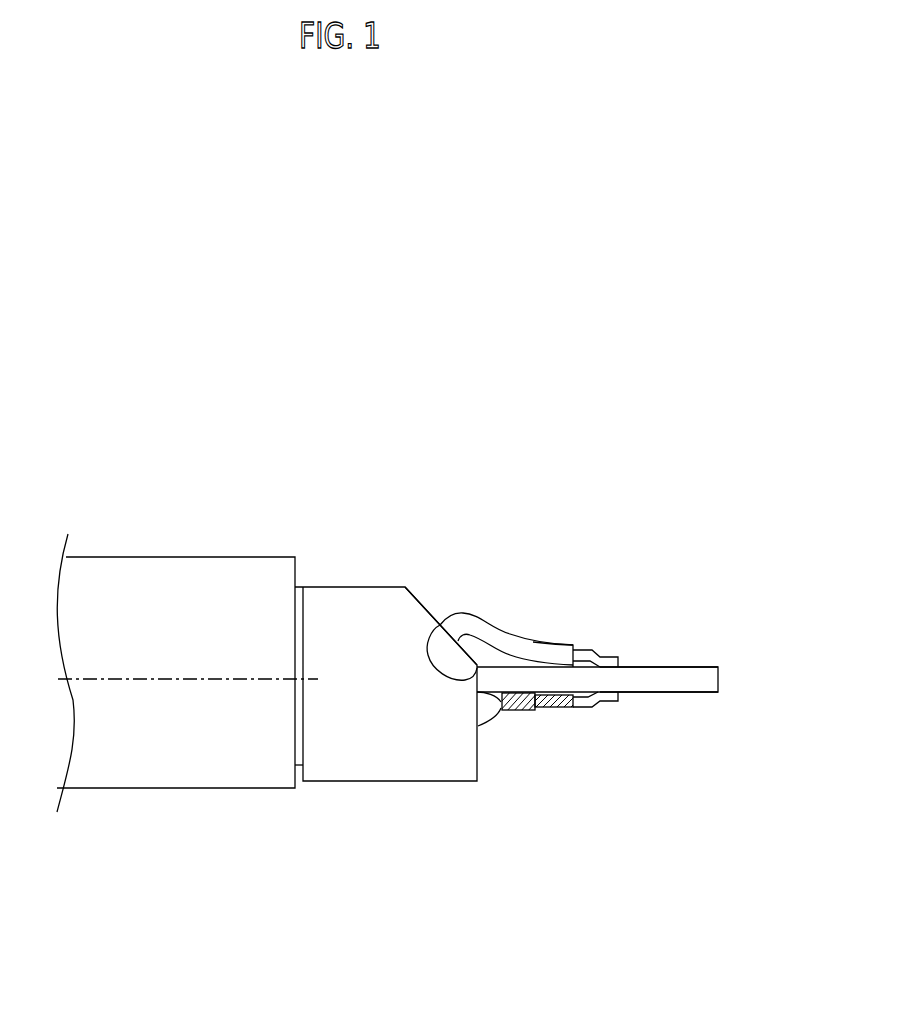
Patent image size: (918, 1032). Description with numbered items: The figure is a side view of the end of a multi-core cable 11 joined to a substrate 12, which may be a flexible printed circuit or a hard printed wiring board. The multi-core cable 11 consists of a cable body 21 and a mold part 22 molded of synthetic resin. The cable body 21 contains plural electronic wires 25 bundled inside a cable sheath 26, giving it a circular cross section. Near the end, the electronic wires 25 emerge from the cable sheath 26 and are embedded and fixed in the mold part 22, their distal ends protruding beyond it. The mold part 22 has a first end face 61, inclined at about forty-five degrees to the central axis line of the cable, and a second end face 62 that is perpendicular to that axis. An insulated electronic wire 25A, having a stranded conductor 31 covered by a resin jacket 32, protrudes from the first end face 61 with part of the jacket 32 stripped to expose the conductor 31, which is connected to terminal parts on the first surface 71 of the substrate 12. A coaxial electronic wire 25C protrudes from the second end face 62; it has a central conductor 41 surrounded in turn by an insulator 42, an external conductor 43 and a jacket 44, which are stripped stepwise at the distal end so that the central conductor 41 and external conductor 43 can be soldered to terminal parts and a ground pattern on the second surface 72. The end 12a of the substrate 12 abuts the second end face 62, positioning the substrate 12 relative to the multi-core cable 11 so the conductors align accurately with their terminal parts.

The multi-core cable 11 is at (419, 366).
The substrate 12 is at (714, 658).
The end of the substrate 12a is at (437, 623).
The cable body 21 is at (120, 549).
The mold part 22 is at (351, 788).
The electronic wires 25 is at (507, 620).
The insulated electronic wire 25A is at (523, 592).
The coaxial electronic wire 25C is at (557, 782).
The cable sheath 26 is at (164, 580).
The conductor 31 is at (595, 650).
The jacket 32 is at (550, 645).
The central conductor 41 is at (600, 703).
The insulator 42 is at (558, 710).
The external conductor 43 is at (527, 712).
The jacket 44 is at (485, 727).
The first end face 61 is at (425, 600).
The second end face 62 is at (478, 757).
The first surface 71 is at (660, 667).
The second surface 72 is at (700, 692).